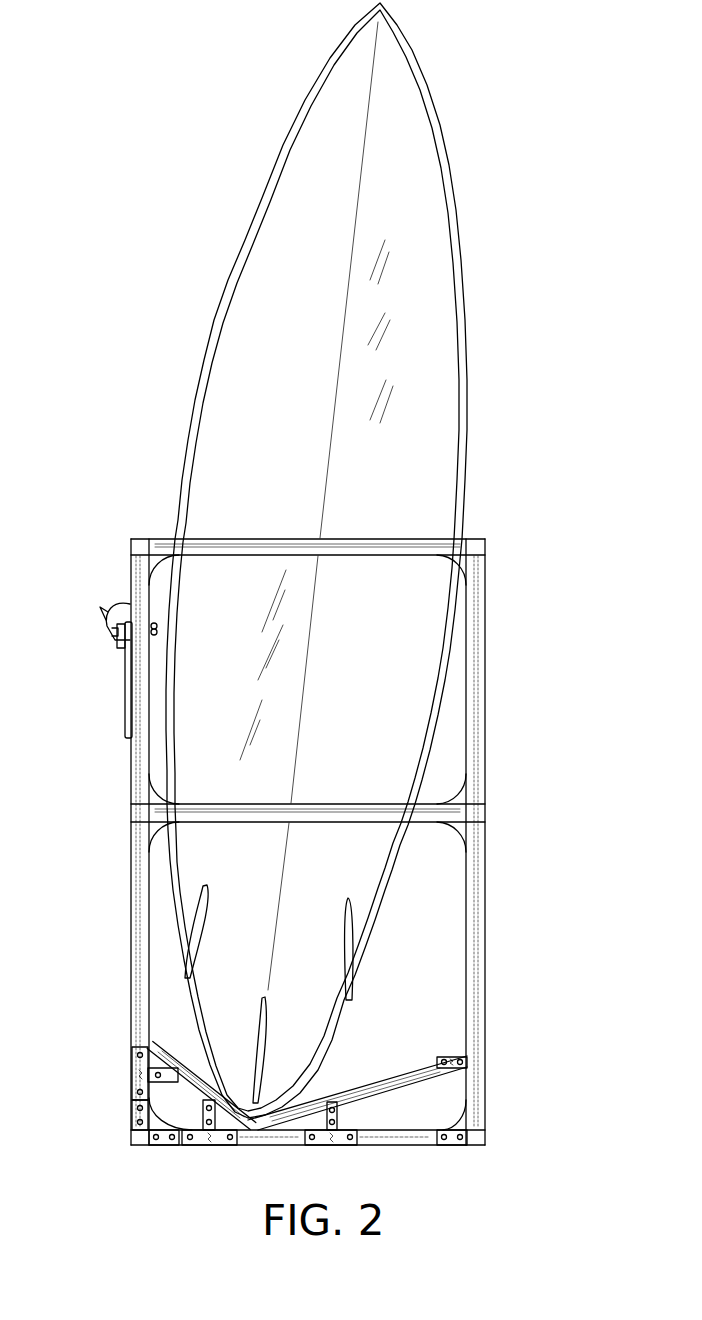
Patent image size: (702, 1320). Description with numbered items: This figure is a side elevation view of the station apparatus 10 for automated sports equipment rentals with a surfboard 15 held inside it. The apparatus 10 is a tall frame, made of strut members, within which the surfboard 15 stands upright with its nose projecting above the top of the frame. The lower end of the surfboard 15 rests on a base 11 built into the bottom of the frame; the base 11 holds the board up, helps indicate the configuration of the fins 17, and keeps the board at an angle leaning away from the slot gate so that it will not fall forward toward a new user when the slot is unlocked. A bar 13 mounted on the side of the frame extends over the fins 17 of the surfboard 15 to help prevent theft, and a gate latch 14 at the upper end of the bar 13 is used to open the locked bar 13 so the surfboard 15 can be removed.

The station apparatus 10 is at (512, 674).
The base 11 is at (400, 1088).
The bar 13 is at (125, 723).
The gate latch 14 is at (110, 640).
The surfboard 15 is at (453, 222).
The fin 17 is at (192, 926).